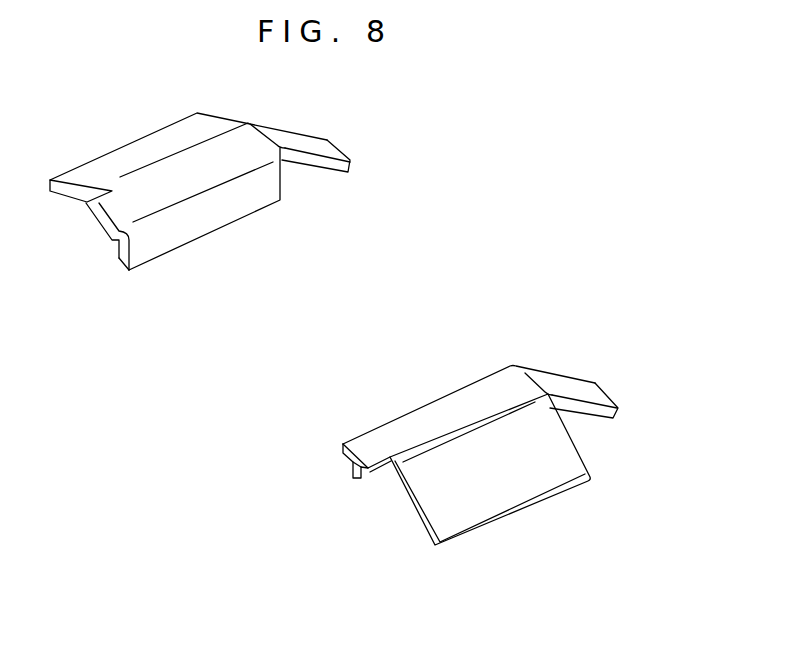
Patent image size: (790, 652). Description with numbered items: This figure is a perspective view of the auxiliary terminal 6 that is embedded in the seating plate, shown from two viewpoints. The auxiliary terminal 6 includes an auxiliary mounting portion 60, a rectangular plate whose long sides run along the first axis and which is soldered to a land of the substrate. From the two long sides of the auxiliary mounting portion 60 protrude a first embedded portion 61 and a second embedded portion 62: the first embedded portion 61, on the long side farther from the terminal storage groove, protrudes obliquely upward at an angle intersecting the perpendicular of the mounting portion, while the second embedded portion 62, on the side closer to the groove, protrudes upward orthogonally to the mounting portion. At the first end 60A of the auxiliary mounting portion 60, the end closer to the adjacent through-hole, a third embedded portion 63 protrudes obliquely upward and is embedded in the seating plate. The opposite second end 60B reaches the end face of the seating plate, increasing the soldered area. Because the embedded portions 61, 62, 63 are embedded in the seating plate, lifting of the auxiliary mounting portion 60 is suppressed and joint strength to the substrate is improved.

The auxiliary terminal 6 is at (325, 132).
The auxiliary mounting portion 60 is at (193, 157).
The first end 60A is at (258, 125).
The second end 60B is at (96, 208).
The first embedded portion 61 is at (217, 125).
The second embedded portion 62 is at (227, 213).
The third embedded portion 63 is at (290, 142).